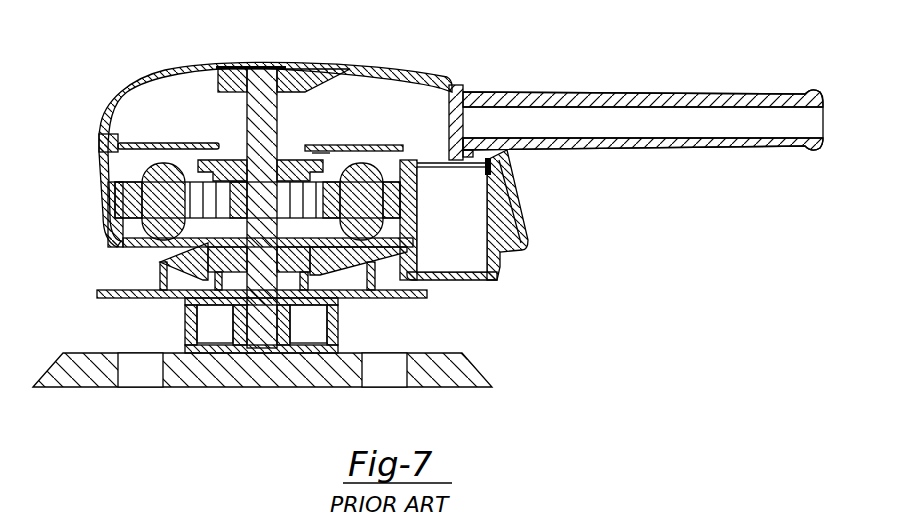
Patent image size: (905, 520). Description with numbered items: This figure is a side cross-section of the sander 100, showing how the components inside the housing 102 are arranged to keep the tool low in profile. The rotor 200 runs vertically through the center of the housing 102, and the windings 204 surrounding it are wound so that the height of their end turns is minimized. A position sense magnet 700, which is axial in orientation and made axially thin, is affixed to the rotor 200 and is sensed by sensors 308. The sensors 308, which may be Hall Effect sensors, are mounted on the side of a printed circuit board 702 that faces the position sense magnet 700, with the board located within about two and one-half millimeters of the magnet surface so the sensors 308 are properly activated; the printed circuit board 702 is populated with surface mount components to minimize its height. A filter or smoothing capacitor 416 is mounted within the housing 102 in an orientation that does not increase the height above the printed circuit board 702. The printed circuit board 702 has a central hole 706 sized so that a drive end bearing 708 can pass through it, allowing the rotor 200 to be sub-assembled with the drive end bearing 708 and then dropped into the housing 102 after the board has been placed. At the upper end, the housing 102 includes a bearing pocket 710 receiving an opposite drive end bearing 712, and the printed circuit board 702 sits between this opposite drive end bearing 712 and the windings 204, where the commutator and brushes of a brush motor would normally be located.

The sander 100 is at (194, 400).
The housing 102 is at (138, 82).
The rotor 200 is at (278, 110).
The windings 204 is at (156, 177).
The sensors 308 is at (312, 152).
The filter or smoothing capacitor 416 is at (467, 265).
The position sense magnet 700 is at (290, 160).
The printed circuit board 702 is at (364, 140).
The central hole 706 is at (219, 144).
The drive end bearing 708 is at (165, 259).
The bearing pocket 710 is at (296, 77).
The opposite drive end bearing 712 is at (224, 72).